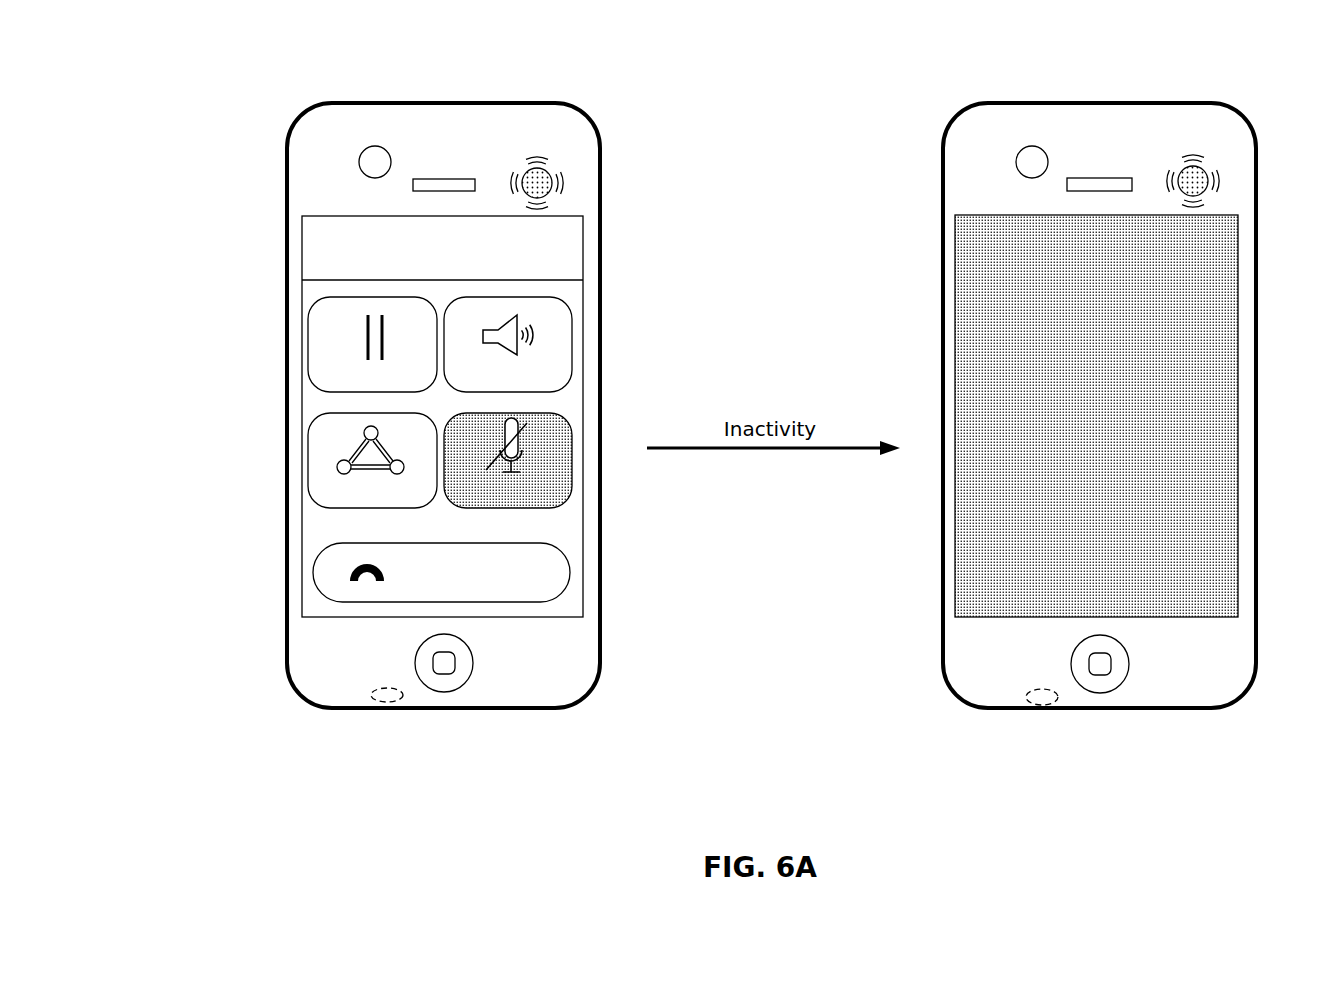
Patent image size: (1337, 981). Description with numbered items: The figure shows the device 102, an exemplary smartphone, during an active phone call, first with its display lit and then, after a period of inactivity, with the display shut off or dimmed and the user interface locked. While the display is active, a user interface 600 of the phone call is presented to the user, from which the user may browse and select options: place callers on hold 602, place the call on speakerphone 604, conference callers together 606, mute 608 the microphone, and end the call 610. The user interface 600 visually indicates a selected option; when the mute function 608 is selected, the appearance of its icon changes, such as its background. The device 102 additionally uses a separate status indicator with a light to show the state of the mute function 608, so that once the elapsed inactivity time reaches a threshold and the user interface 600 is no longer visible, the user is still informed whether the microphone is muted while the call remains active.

The device 102 is at (244, 98).
The user interface 600 is at (590, 519).
The hold option 602 is at (322, 353).
The speakerphone option 604 is at (562, 332).
The conference option 606 is at (322, 448).
The mute function 608 is at (573, 431).
The end call option 610 is at (322, 575).